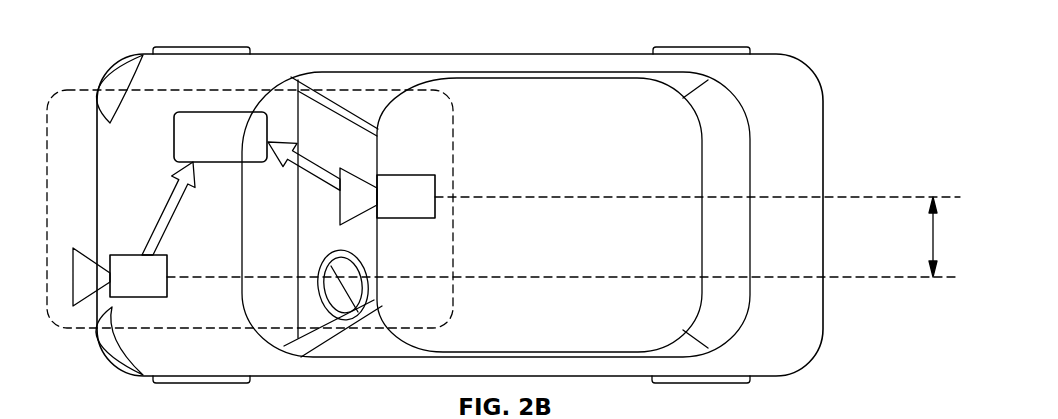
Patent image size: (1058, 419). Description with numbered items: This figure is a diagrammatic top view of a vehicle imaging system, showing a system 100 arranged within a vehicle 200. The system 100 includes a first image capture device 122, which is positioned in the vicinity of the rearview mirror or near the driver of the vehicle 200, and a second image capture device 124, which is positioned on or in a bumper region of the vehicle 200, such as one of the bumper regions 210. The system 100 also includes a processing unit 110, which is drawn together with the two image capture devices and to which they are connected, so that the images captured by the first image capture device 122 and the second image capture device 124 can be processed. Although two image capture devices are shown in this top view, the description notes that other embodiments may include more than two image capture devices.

The system 100 is at (452, 106).
The processing unit 110 is at (207, 112).
The first image capture device 122 is at (405, 175).
The second image capture device 124 is at (130, 255).
The vehicle 200 is at (875, 90).
The bumper regions 210 is at (118, 58).